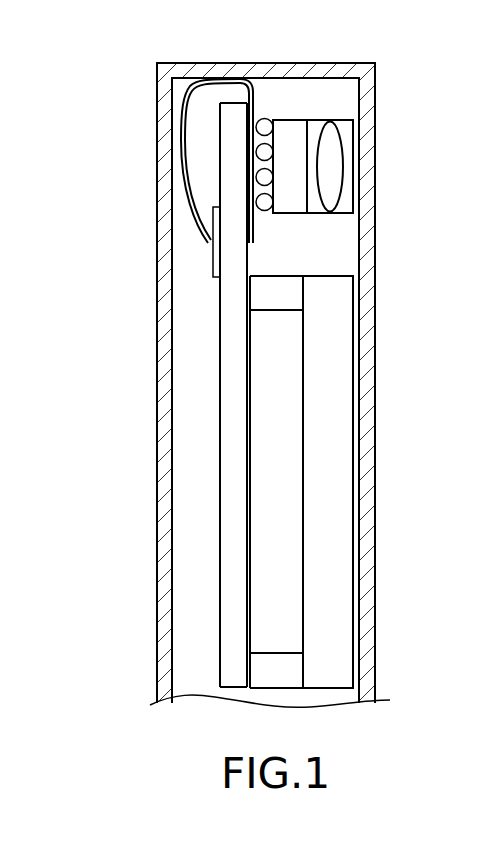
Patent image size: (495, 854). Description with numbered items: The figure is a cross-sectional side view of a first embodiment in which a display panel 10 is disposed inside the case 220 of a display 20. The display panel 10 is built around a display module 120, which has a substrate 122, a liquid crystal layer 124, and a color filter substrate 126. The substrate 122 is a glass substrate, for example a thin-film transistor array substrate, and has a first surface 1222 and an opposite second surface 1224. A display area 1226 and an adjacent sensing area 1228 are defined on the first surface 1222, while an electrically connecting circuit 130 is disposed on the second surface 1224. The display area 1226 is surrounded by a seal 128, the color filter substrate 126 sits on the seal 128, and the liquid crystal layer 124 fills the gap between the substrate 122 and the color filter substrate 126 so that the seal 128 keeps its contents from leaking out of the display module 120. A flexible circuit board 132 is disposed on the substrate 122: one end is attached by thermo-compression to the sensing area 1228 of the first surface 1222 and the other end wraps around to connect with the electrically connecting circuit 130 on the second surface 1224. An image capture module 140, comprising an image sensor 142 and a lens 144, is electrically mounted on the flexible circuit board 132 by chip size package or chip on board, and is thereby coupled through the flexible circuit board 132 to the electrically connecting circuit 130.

The display panel 10 is at (210, 562).
The display 20 is at (113, 91).
The display module 120 is at (347, 482).
The substrate 122 is at (269, 395).
The liquid crystal layer 124 is at (288, 608).
The color filter substrate 126 is at (332, 545).
The seal 128 is at (292, 292).
The electrically connecting circuit 130 is at (216, 255).
The flexible circuit board 132 is at (186, 86).
The image capture module 140 is at (352, 113).
The image sensor 142 is at (290, 132).
The lens 144 is at (333, 170).
The case 220 is at (165, 418).
The first surface 1222 is at (250, 260).
The second surface 1224 is at (220, 346).
The display area 1226 is at (255, 425).
The sensing area 1228 is at (259, 117).